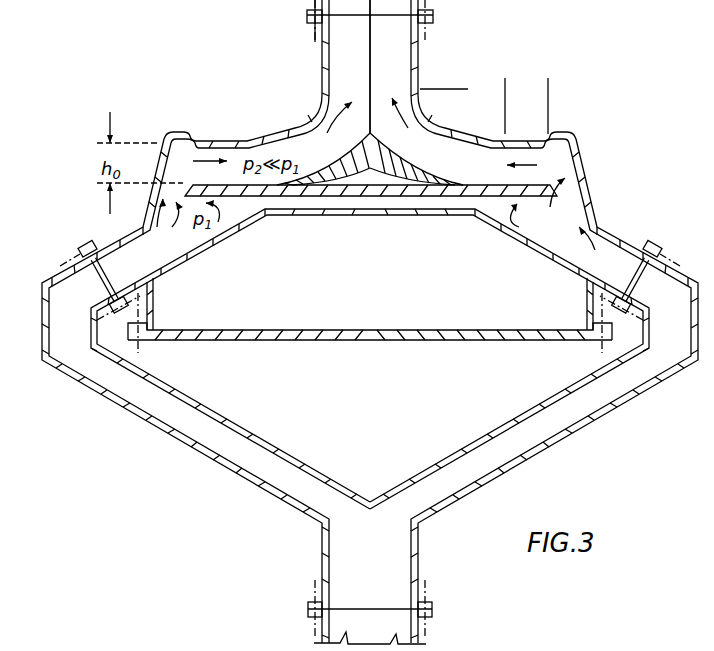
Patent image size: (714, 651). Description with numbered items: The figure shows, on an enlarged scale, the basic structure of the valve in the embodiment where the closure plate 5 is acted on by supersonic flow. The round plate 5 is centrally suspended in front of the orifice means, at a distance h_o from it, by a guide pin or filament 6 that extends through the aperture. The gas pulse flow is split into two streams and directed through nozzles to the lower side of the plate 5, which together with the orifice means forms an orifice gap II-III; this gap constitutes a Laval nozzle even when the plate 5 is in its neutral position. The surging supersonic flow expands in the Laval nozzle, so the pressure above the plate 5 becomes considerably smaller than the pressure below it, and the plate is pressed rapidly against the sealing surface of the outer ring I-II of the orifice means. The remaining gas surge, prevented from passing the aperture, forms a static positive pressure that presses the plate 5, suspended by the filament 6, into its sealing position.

The plate 5 is at (524, 198).
The filament 6 is at (370, 67).
The outer ring boundary I is at (548, 102).
The orifice gap boundary II is at (505, 101).
The orifice gap boundary III is at (456, 90).